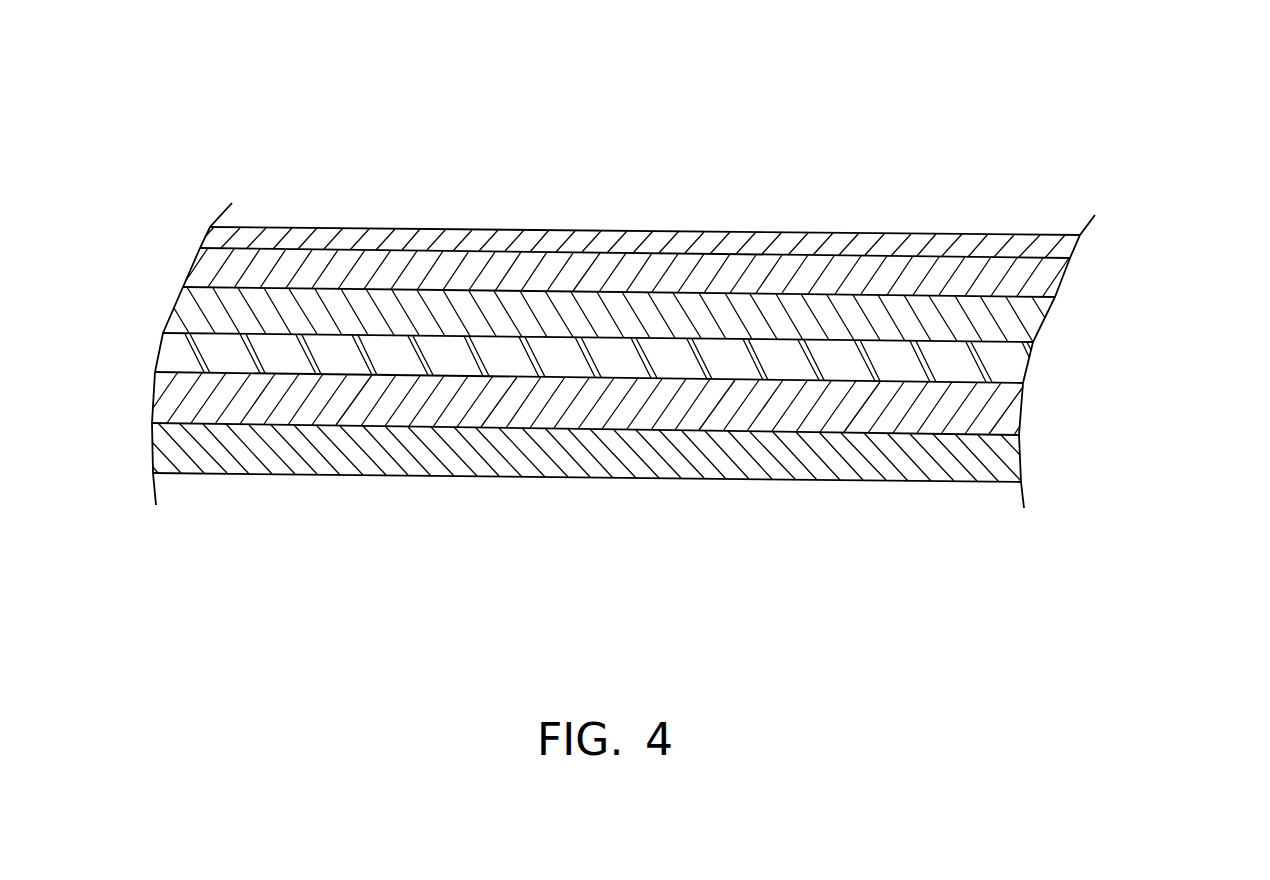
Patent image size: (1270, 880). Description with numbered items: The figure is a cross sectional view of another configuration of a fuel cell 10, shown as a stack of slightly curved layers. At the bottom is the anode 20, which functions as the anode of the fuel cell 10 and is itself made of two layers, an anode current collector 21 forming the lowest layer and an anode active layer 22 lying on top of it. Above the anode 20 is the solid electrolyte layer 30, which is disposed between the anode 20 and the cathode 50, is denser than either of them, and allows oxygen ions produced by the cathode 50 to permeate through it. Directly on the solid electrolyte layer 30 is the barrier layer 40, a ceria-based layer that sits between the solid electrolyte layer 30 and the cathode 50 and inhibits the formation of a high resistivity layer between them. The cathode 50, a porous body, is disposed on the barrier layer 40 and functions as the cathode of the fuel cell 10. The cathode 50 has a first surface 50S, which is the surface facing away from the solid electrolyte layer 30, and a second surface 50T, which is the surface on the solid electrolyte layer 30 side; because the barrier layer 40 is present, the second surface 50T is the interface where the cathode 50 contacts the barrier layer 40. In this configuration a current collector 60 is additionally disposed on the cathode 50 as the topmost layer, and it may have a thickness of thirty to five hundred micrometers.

The fuel cell 10 is at (1166, 132).
The anode 20 is at (1132, 393).
The anode current collector 21 is at (1010, 455).
The anode active layer 22 is at (1010, 410).
The solid electrolyte layer 30 is at (1010, 362).
The barrier layer 40 is at (1030, 318).
The cathode 50 is at (1052, 285).
The first surface 50S is at (233, 237).
The second surface 50T is at (203, 291).
The current collector 60 is at (1068, 247).